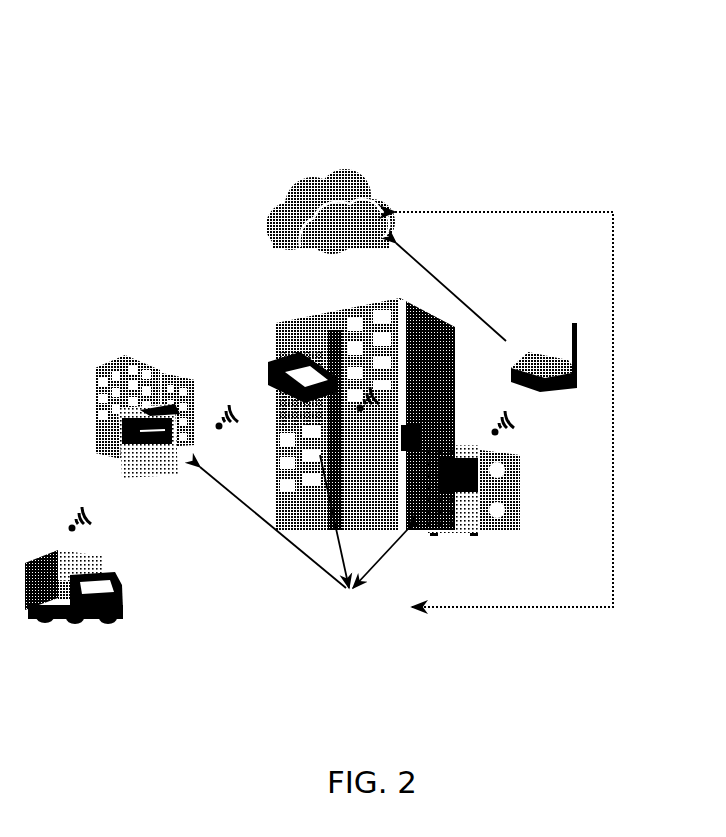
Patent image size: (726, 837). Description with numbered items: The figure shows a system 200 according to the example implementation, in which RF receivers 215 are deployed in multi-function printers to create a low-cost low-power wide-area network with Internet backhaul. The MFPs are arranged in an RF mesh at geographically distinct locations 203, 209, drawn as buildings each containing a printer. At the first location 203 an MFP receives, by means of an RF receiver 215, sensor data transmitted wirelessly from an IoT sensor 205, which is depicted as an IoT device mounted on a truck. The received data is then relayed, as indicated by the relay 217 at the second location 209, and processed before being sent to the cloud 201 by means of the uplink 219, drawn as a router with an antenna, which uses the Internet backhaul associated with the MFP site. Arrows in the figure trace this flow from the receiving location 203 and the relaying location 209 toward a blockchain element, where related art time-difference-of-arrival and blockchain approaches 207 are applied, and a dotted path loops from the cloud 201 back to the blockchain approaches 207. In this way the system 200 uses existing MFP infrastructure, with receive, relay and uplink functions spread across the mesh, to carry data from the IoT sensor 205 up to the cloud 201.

The system 200 is at (388, 25).
The cloud 201 is at (256, 194).
The geographically distinct location 203 is at (123, 354).
The IoT sensor 205 is at (59, 618).
The TDoA and blockchain approaches 207 is at (360, 632).
The geographically distinct location 209 is at (328, 297).
The RF receiver 215 is at (177, 488).
The relay 217 is at (260, 364).
The uplink 219 is at (549, 340).